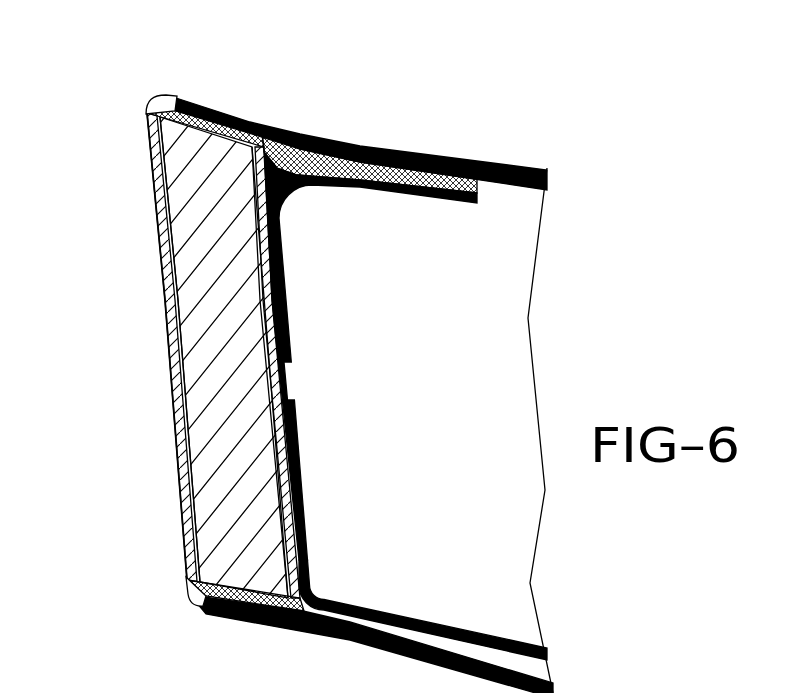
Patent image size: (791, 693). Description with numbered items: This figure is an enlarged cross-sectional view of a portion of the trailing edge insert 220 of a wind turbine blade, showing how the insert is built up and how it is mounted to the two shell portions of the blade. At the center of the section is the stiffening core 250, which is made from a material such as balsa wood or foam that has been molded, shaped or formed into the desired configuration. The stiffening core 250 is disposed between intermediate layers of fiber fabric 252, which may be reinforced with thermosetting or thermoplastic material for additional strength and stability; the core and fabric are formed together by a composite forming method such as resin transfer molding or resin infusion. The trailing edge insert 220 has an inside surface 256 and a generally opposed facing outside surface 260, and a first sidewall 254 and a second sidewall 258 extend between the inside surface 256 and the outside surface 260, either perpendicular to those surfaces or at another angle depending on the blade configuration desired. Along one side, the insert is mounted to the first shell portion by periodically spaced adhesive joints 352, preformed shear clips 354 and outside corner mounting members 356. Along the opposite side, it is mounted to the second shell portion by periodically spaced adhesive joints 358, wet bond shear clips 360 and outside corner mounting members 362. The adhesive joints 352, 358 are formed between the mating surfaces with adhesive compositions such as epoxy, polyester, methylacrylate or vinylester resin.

The trailing edge insert 220 is at (283, 346).
The stiffening core 250 is at (243, 480).
The layers of fiber fabric 252 is at (270, 274).
The first sidewall 254 is at (223, 600).
The inside surface 256 is at (283, 383).
The second sidewall 258 is at (228, 132).
The outside surface 260 is at (163, 296).
The adhesive joints 352 is at (200, 122).
The preformed shear clips 354 is at (343, 180).
The outside corner mounting members 356 is at (163, 103).
The adhesive joints 358 is at (268, 598).
The wet bond shear clips 360 is at (323, 592).
The outside corner mounting members 362 is at (197, 603).